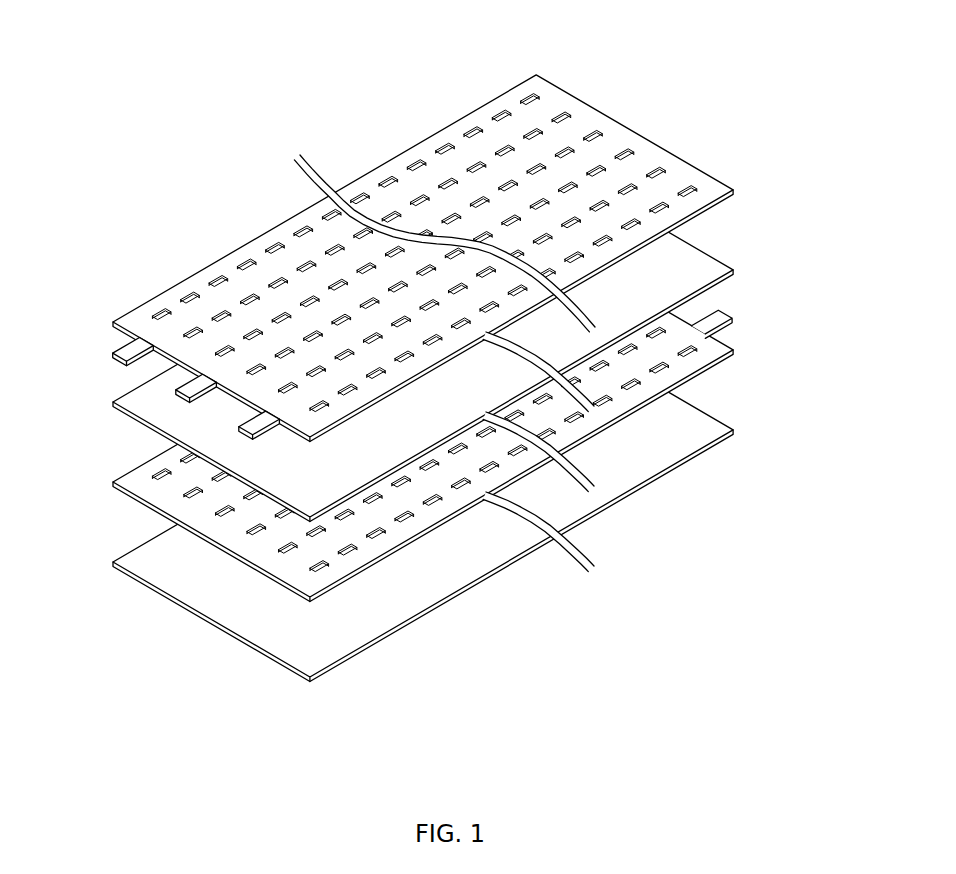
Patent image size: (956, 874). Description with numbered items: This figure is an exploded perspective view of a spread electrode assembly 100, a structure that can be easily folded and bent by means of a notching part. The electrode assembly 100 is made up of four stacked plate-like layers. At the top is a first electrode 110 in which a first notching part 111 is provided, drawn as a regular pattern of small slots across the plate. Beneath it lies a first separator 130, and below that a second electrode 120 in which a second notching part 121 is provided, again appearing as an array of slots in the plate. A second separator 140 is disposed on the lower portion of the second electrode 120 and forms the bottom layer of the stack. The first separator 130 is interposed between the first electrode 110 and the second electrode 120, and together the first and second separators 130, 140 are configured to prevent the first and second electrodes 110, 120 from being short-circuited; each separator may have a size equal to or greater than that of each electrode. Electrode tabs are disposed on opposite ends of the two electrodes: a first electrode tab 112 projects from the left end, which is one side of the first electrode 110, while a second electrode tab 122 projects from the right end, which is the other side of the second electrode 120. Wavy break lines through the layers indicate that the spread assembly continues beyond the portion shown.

The electrode assembly 100 is at (435, 348).
The first electrode 110 is at (718, 179).
The first notching part 111 is at (221, 277).
The first electrode tab 112 is at (118, 354).
The second electrode 120 is at (713, 338).
The second notching part 121 is at (386, 536).
The second electrode tab 122 is at (727, 311).
The first separator 130 is at (718, 259).
The second separator 140 is at (718, 419).